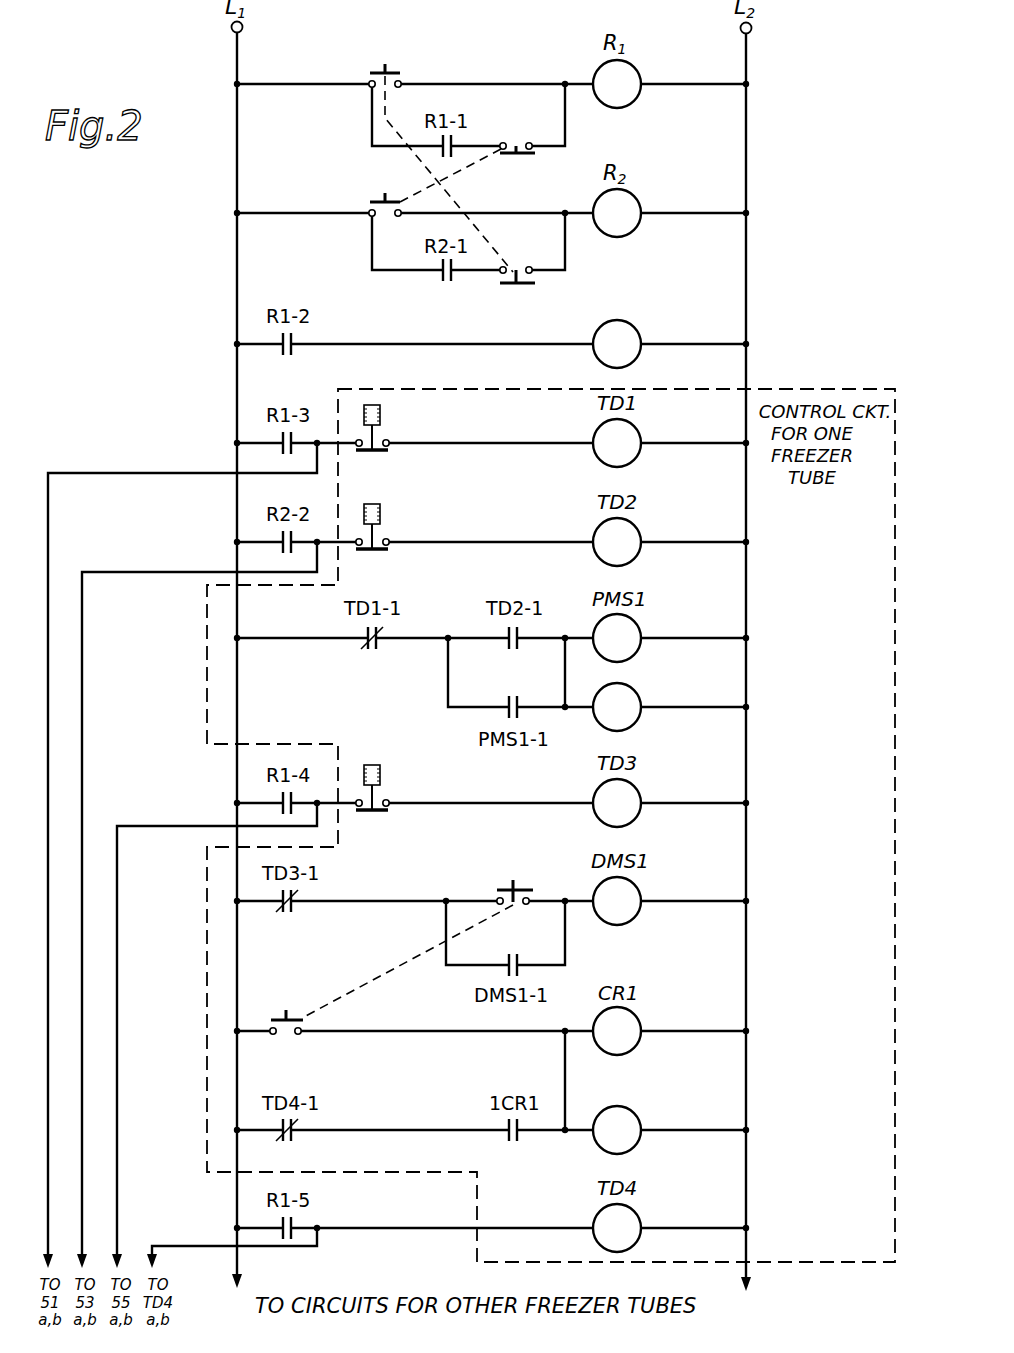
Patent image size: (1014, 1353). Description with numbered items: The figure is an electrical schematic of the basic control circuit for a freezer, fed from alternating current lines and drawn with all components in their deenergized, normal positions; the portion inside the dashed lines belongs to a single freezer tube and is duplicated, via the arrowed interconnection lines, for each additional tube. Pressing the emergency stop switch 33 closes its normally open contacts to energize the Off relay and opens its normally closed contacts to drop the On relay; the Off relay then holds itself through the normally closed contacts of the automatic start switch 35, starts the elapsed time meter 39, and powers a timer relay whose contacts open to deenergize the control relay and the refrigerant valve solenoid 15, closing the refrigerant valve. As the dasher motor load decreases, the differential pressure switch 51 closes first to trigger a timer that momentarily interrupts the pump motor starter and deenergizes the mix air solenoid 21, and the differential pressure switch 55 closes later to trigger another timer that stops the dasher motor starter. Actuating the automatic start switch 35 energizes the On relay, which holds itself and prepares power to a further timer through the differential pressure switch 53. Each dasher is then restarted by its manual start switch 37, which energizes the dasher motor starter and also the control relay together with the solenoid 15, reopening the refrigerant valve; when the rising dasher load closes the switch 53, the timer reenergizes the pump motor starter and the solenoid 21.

The emergency stop switch 33 is at (373, 71).
The automatic start switch 35 is at (370, 212).
The elapsed time meter 39 is at (632, 327).
The differential pressure switch 51 is at (386, 440).
The differential pressure switch 53 is at (386, 539).
The differential pressure switch 55 is at (386, 800).
The mix air solenoid 21 is at (632, 724).
The manual start switch 37 is at (498, 899).
The refrigerant valve solenoid 15 is at (633, 1113).